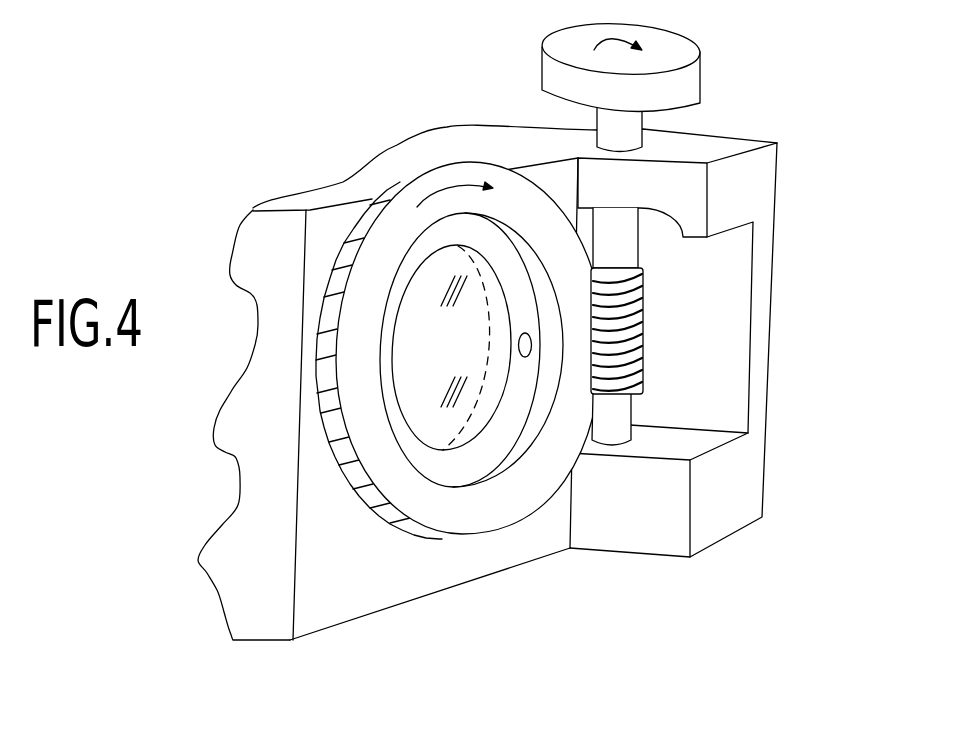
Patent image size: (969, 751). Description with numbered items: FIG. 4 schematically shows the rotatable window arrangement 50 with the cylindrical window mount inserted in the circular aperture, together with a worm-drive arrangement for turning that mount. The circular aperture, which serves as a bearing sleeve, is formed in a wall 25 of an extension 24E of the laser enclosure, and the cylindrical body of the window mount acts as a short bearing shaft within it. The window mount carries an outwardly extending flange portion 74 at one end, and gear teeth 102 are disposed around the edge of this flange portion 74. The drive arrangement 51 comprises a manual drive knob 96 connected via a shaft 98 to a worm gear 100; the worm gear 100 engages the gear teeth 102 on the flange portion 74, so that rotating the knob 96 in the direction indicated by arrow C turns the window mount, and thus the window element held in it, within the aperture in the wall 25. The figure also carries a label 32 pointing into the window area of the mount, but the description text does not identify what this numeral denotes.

The rotatable window arrangement 50 is at (150, 460).
The wall 25 is at (332, 583).
The extension 24E is at (422, 128).
The drive arrangement 51 is at (682, 308).
The gear teeth 102 is at (346, 236).
The flange portion 74 is at (500, 510).
The lens 32 is at (428, 337).
The shaft 98 is at (617, 230).
The worm gear 100 is at (643, 343).
The manual drive knob 96 is at (688, 80).